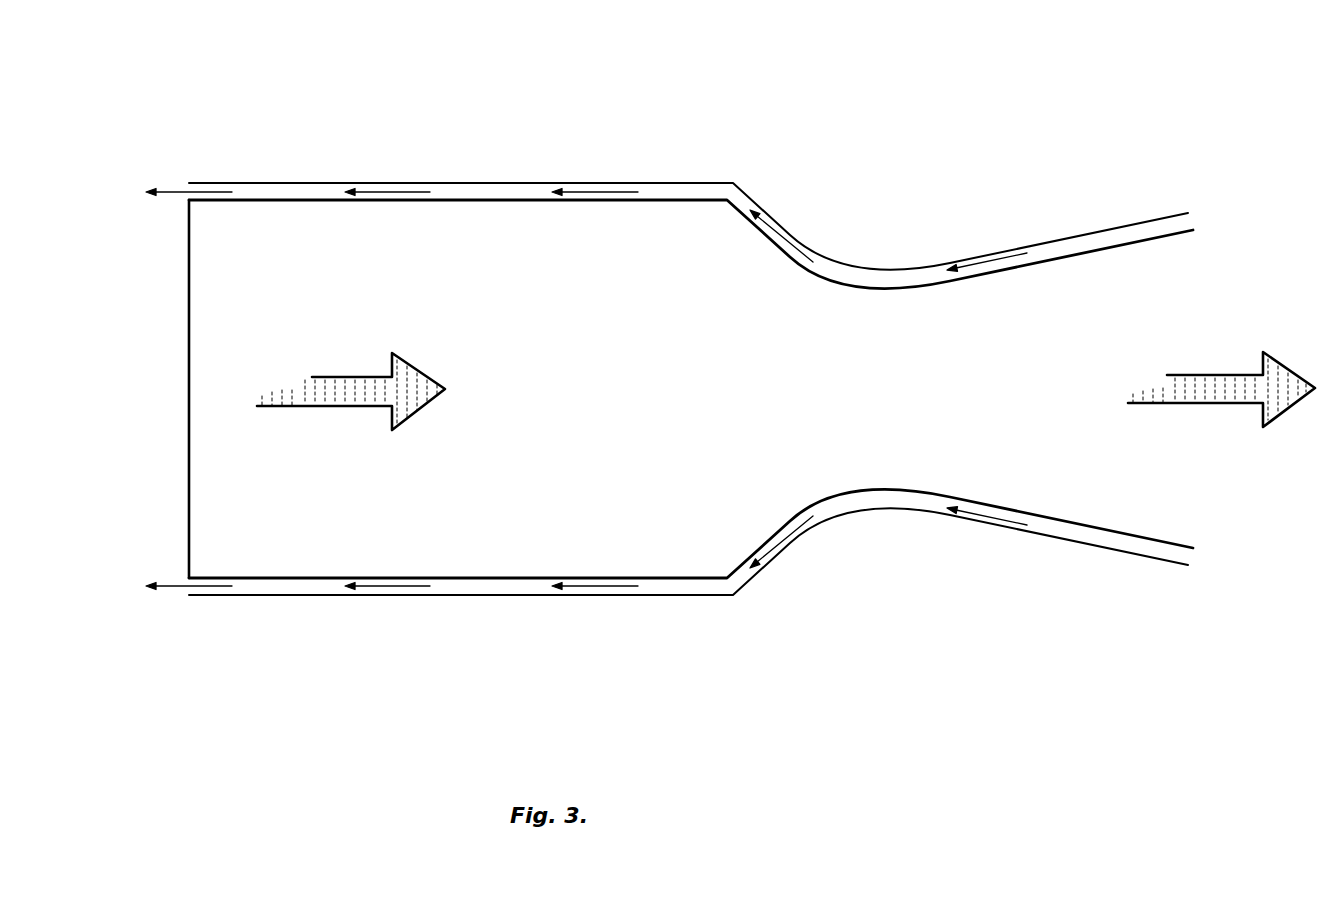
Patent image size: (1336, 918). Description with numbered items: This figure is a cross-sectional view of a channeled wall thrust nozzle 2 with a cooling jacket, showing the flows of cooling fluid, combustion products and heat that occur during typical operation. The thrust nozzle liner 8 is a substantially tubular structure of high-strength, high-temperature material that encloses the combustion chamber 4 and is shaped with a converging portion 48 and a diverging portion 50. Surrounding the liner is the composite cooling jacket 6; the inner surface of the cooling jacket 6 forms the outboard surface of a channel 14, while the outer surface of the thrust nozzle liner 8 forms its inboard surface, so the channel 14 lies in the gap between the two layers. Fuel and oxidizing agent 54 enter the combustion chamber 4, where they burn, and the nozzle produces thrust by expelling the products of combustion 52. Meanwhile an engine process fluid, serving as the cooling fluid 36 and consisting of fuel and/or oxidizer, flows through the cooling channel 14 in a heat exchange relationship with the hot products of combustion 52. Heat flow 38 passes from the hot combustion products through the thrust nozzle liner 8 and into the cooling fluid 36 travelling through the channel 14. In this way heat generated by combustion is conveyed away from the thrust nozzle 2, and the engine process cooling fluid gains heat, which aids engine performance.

The channeled wall thrust nozzle 2 is at (222, 121).
The combustion chamber 4 is at (553, 372).
The cooling jacket 6 is at (463, 596).
The thrust nozzle liner 8 is at (455, 202).
The channel 14 is at (293, 193).
The cooling fluid 36 is at (1199, 218).
The heat flow 38 is at (1059, 263).
The converging portion 48 is at (812, 236).
The diverging portion 50 is at (1014, 224).
The products of combustion 52 is at (1192, 373).
The fuel and oxidizing agent 54 is at (304, 378).